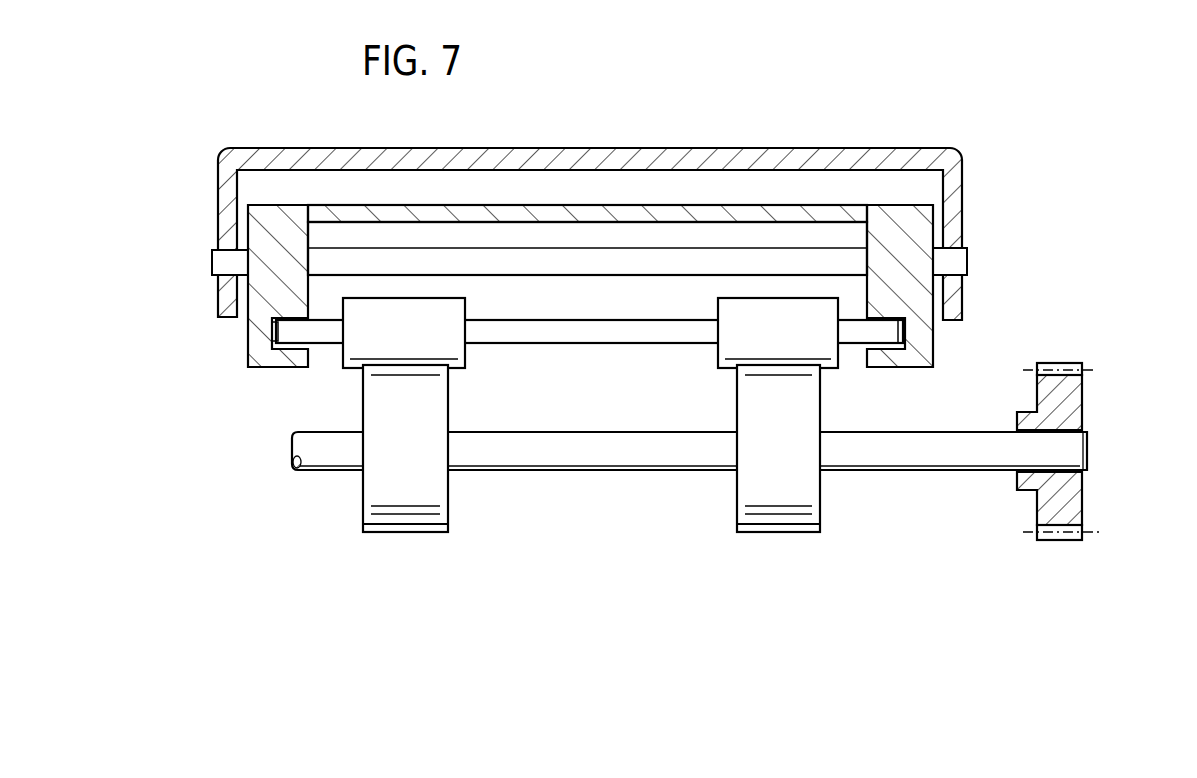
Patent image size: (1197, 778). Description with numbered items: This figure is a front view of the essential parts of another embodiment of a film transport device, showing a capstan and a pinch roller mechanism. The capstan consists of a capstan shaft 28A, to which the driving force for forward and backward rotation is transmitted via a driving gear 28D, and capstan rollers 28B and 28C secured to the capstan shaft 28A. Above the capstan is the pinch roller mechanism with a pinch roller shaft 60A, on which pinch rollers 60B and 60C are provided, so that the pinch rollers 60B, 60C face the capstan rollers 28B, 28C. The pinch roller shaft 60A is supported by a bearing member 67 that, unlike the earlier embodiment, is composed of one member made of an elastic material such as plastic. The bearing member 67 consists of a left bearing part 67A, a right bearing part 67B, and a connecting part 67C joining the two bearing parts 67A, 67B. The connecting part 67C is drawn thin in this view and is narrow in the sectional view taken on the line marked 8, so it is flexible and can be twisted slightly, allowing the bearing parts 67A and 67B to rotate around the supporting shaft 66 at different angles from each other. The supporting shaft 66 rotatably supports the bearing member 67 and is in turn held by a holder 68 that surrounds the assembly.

The section line 8— 8 is at (270, 177).
The capstan shaft 28A is at (328, 462).
The capstan roller 28B is at (397, 533).
The capstan roller 28C is at (762, 533).
The driving gear 28D is at (1075, 406).
The pinch roller shaft 60A is at (605, 333).
The pinch roller 60B is at (472, 347).
The pinch roller 60C is at (842, 350).
The supporting shaft 66 is at (737, 253).
The bearing member 67 is at (617, 261).
The left bearing part 67A is at (250, 350).
The right bearing part 67B is at (933, 342).
The connecting part 67C is at (570, 205).
The holder 68 is at (955, 170).